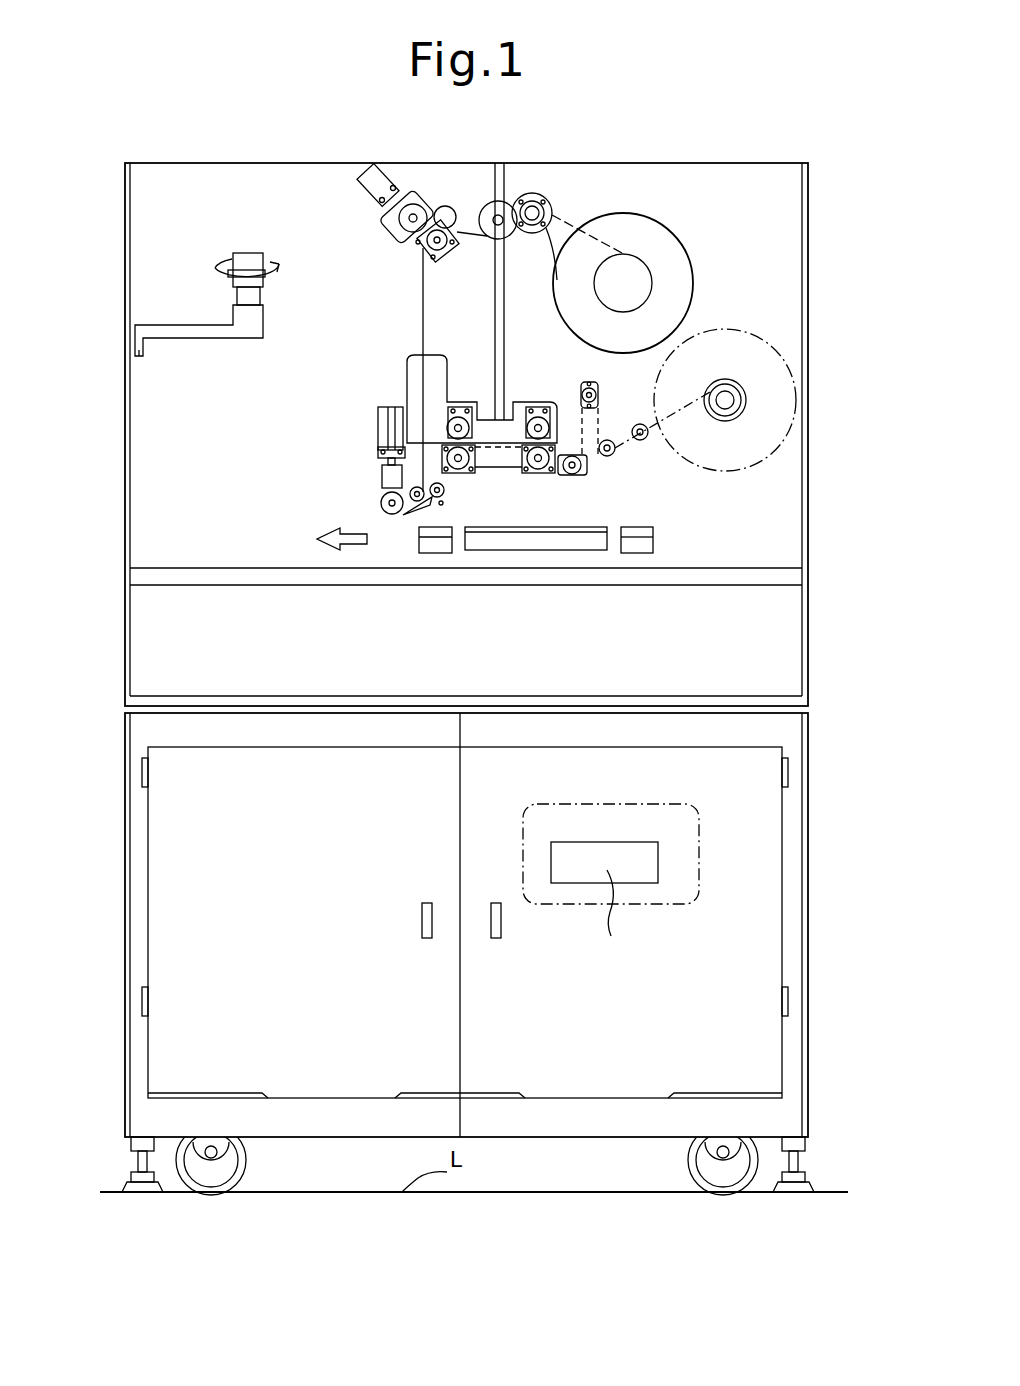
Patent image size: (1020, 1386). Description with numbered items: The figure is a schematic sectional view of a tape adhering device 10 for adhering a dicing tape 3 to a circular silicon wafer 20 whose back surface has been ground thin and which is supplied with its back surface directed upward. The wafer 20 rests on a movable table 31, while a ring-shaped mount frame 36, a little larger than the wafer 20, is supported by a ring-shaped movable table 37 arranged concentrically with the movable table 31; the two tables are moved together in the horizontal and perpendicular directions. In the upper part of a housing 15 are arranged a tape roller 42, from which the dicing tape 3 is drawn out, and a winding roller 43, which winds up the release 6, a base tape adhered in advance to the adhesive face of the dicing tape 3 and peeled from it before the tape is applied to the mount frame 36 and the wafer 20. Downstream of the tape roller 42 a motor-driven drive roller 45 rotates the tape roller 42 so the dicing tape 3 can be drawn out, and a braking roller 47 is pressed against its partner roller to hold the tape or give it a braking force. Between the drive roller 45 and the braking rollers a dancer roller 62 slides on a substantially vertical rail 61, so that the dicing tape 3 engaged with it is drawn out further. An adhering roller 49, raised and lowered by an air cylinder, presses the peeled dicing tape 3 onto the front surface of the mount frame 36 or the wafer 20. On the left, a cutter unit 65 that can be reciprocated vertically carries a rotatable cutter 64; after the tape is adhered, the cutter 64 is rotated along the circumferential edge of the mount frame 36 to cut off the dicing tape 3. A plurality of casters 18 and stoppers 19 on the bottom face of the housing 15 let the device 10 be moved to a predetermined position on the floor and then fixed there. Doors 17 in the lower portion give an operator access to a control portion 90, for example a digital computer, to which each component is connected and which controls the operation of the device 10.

The tape adhering device 10 is at (712, 152).
The housing 15 is at (808, 282).
The doors 17 is at (163, 886).
The casters 18 is at (245, 1160).
The stoppers 19 is at (131, 1163).
The control portion 90 is at (568, 842).
The cutter unit 65 is at (245, 250).
The cutter 64 is at (140, 358).
The braking roller 47 is at (404, 236).
The dicing tape 3 is at (421, 333).
The rail 61 is at (495, 181).
The dancer roller 62 is at (478, 218).
The drive roller 45 is at (552, 202).
The tape roller 42 is at (684, 240).
The winding roller 43 is at (740, 387).
The release 6 is at (627, 448).
The wafer 20 is at (520, 527).
The movable table 31 is at (540, 548).
The mount frame 36 is at (443, 530).
The ring-shaped movable table 37 is at (438, 548).
The adhering roller 49 is at (382, 501).